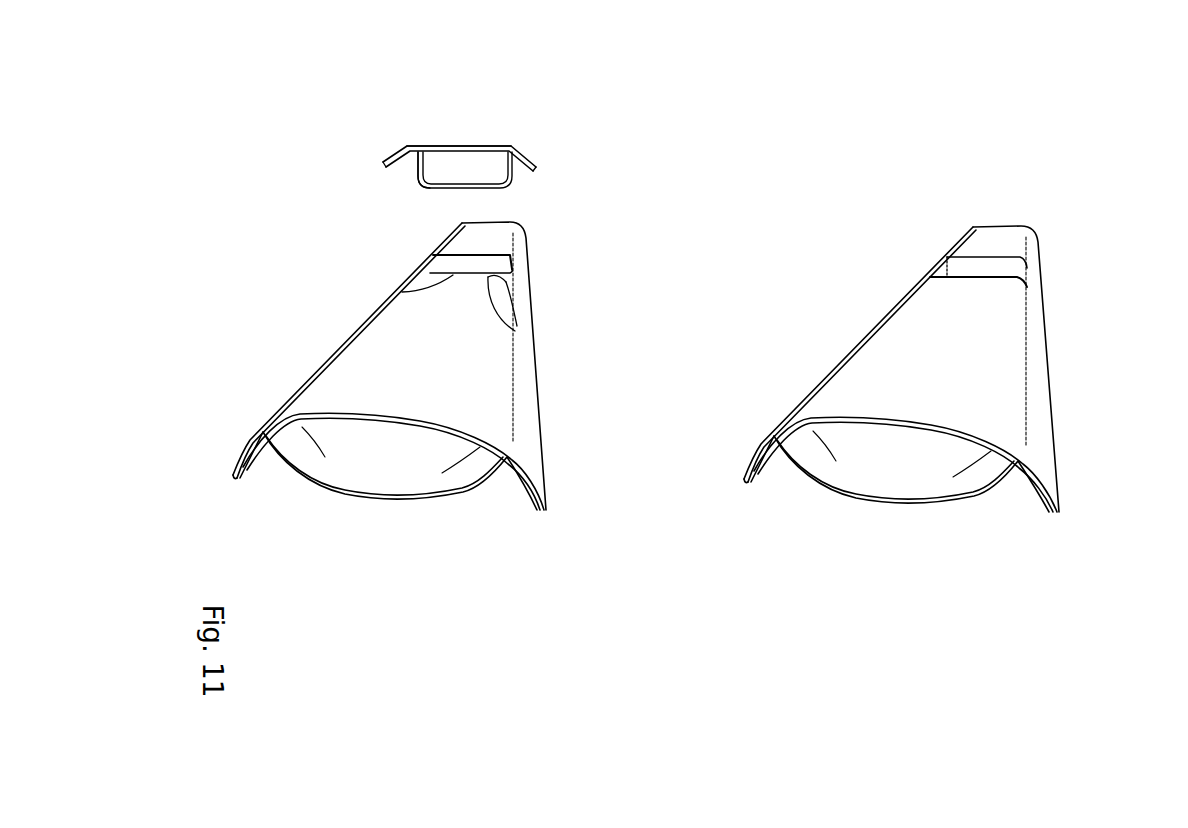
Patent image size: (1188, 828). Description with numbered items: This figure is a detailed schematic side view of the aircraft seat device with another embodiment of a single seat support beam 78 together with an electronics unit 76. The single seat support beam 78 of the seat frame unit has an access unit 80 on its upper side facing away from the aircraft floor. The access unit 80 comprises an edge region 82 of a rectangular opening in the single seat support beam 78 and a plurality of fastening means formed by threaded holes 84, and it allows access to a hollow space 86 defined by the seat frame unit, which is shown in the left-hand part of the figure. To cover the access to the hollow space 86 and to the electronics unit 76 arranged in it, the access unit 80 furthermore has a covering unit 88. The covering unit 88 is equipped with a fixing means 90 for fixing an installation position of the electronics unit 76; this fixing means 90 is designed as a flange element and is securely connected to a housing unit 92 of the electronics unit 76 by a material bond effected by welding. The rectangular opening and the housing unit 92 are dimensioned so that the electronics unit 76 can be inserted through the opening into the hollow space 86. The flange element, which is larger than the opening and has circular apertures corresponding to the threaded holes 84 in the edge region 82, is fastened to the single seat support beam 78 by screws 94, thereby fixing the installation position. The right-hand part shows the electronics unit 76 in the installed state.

The electronics unit 76 is at (412, 185).
The single seat support beam 78 is at (943, 367).
The access unit 80 is at (552, 273).
The edge region 82 is at (447, 282).
The threaded holes 84 is at (515, 331).
The hollow space 86 is at (447, 266).
The covering unit 88 is at (548, 138).
The fixing means 90 is at (398, 153).
The housing unit 92 is at (518, 188).
The screws 94 is at (985, 256).